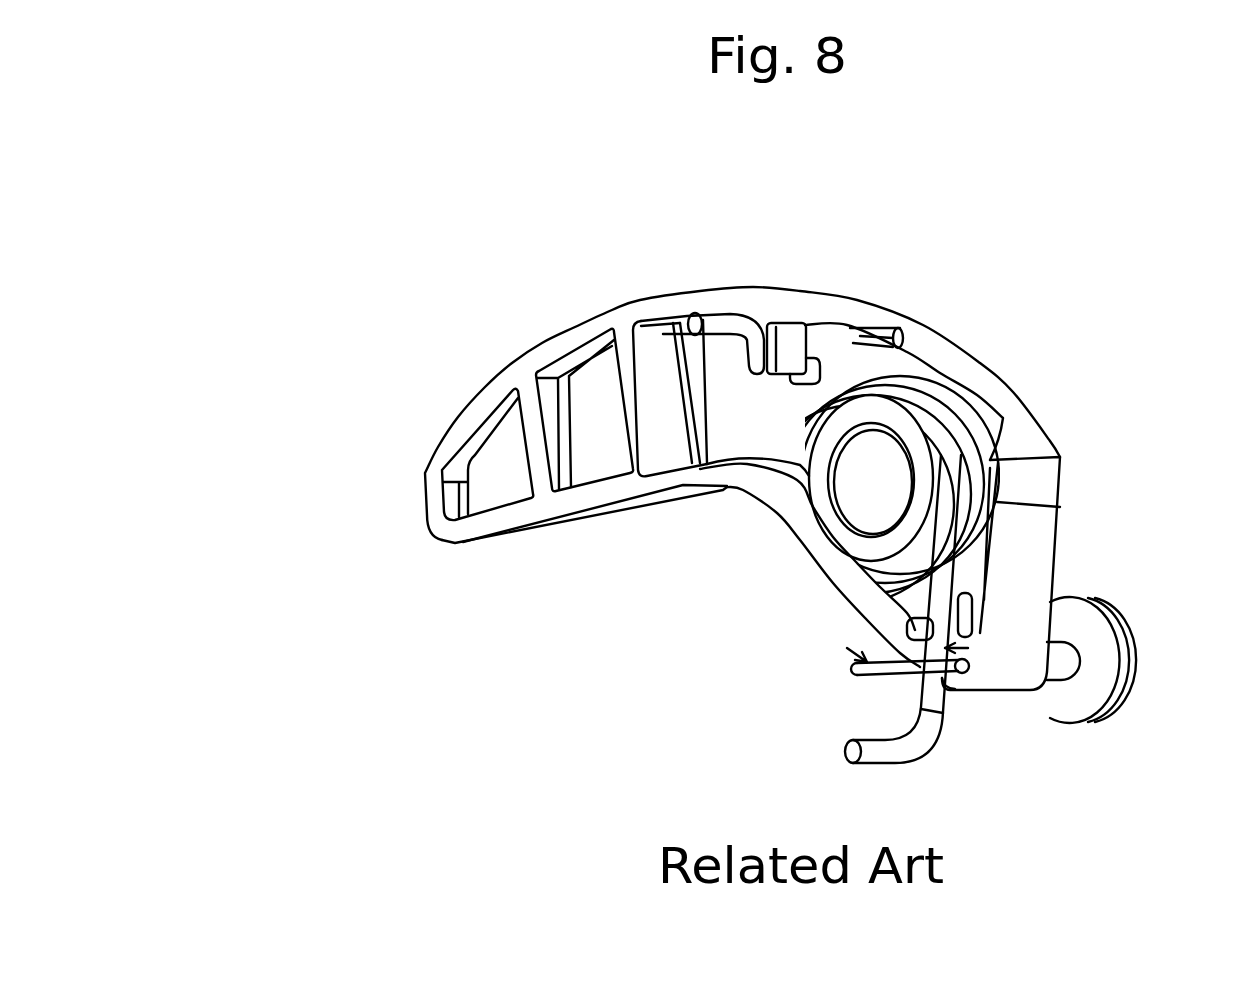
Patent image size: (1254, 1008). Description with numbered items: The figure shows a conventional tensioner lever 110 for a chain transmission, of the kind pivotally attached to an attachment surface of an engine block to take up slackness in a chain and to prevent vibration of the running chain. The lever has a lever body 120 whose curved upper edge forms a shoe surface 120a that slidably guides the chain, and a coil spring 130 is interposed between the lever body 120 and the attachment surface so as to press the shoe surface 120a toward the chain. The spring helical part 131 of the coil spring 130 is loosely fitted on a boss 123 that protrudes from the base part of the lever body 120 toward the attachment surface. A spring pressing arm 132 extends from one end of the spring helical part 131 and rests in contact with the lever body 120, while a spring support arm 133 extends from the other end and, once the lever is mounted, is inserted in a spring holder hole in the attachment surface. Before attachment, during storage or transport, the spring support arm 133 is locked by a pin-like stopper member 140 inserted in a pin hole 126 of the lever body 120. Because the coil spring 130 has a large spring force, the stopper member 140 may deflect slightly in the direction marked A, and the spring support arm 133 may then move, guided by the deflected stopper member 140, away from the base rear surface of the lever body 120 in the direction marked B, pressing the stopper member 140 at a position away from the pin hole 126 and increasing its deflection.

The tensioner lever 110 is at (368, 220).
The lever body 120 is at (592, 328).
The shoe surface 120a is at (813, 297).
The boss 123 is at (828, 528).
The pin hole 126 is at (982, 675).
The coil spring 130 is at (957, 398).
The spring helical part 131 is at (970, 443).
The spring pressing arm 132 is at (742, 318).
The spring support arm 133 is at (937, 705).
The stopper member 140 is at (1073, 700).